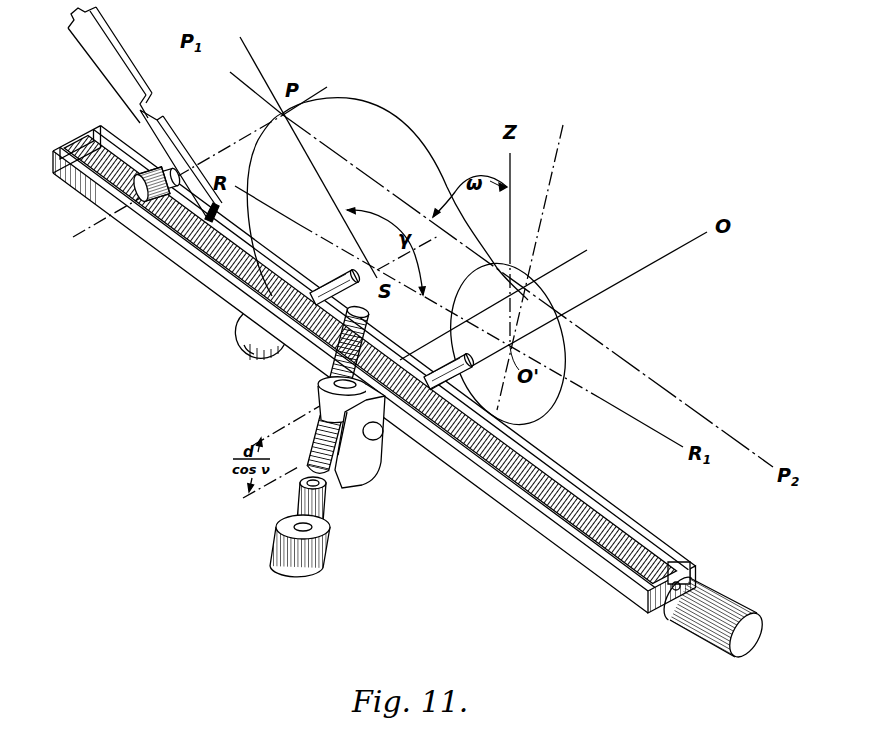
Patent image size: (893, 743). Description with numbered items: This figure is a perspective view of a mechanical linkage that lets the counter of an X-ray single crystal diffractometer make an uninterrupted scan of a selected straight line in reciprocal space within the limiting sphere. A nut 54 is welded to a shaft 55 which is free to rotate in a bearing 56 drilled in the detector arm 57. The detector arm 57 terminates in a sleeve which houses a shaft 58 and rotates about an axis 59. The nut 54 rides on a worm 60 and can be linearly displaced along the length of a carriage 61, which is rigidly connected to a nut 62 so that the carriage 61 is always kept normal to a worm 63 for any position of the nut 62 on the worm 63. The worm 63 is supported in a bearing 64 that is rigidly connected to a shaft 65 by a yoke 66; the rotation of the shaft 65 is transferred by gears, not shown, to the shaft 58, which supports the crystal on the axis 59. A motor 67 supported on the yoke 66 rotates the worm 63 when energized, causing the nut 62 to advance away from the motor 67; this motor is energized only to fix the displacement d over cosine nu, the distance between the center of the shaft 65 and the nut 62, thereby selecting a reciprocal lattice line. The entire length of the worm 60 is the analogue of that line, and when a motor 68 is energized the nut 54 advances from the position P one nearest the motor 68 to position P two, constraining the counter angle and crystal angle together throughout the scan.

The nut 54 is at (152, 172).
The shaft 55 is at (178, 182).
The bearing 56 is at (167, 180).
The detector arm 57 is at (97, 58).
The shaft 58 is at (267, 340).
The axis 59 is at (247, 350).
The worm 60 is at (200, 245).
The carriage 61 is at (130, 218).
The nut 62 is at (323, 382).
The worm 63 is at (295, 470).
The bearing 64 is at (293, 493).
The shaft 65 is at (457, 413).
The yoke 66 is at (360, 480).
The motor 67 is at (277, 570).
The motor 68 is at (730, 660).